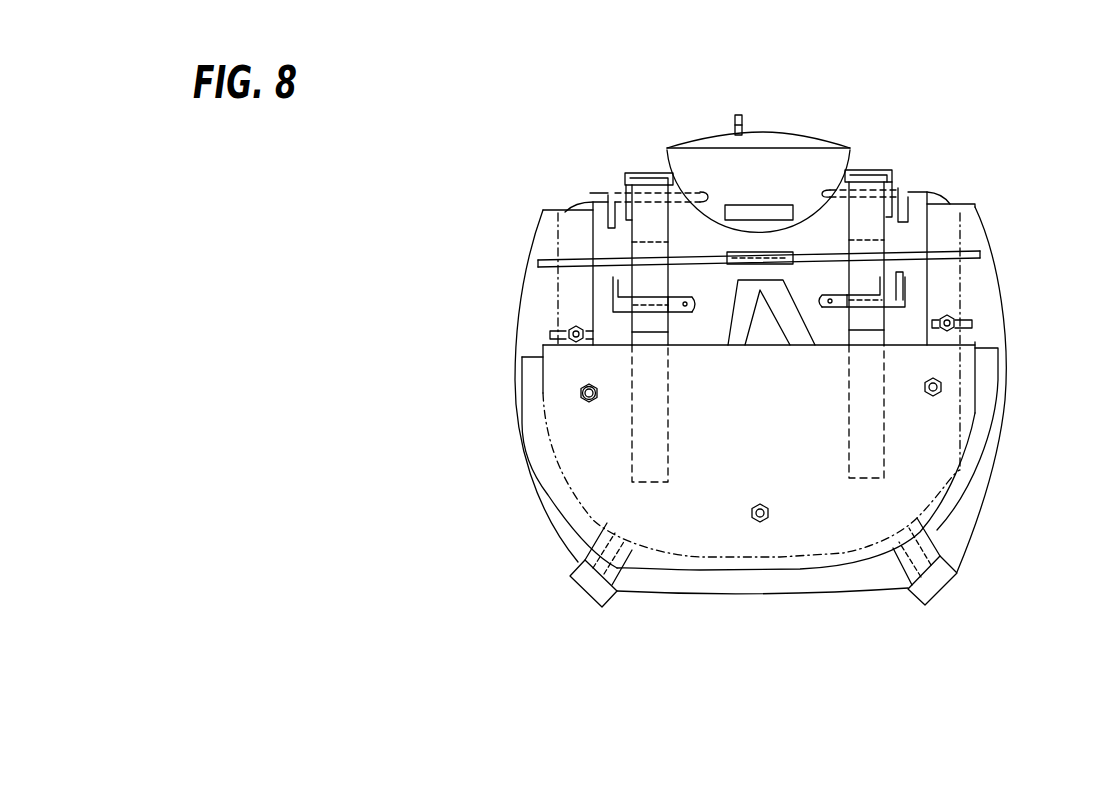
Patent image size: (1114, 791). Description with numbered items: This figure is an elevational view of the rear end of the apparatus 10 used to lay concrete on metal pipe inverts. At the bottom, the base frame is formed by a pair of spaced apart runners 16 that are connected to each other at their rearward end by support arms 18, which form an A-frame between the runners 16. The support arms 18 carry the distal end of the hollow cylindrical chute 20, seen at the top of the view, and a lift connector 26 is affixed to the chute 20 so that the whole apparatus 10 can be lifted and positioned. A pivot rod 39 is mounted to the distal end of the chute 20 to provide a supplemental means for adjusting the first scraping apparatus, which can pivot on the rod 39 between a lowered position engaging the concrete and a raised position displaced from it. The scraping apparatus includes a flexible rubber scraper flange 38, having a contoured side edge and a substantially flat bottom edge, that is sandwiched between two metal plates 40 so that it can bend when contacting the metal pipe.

The apparatus 10 is at (562, 153).
The runners 16 is at (592, 596).
The support arms 18 is at (722, 330).
The chute 20 is at (812, 170).
The lift connector 26 is at (732, 117).
The scraper flange 38 is at (530, 432).
The pivot rod 39 is at (955, 250).
The metal plates 40 is at (947, 452).